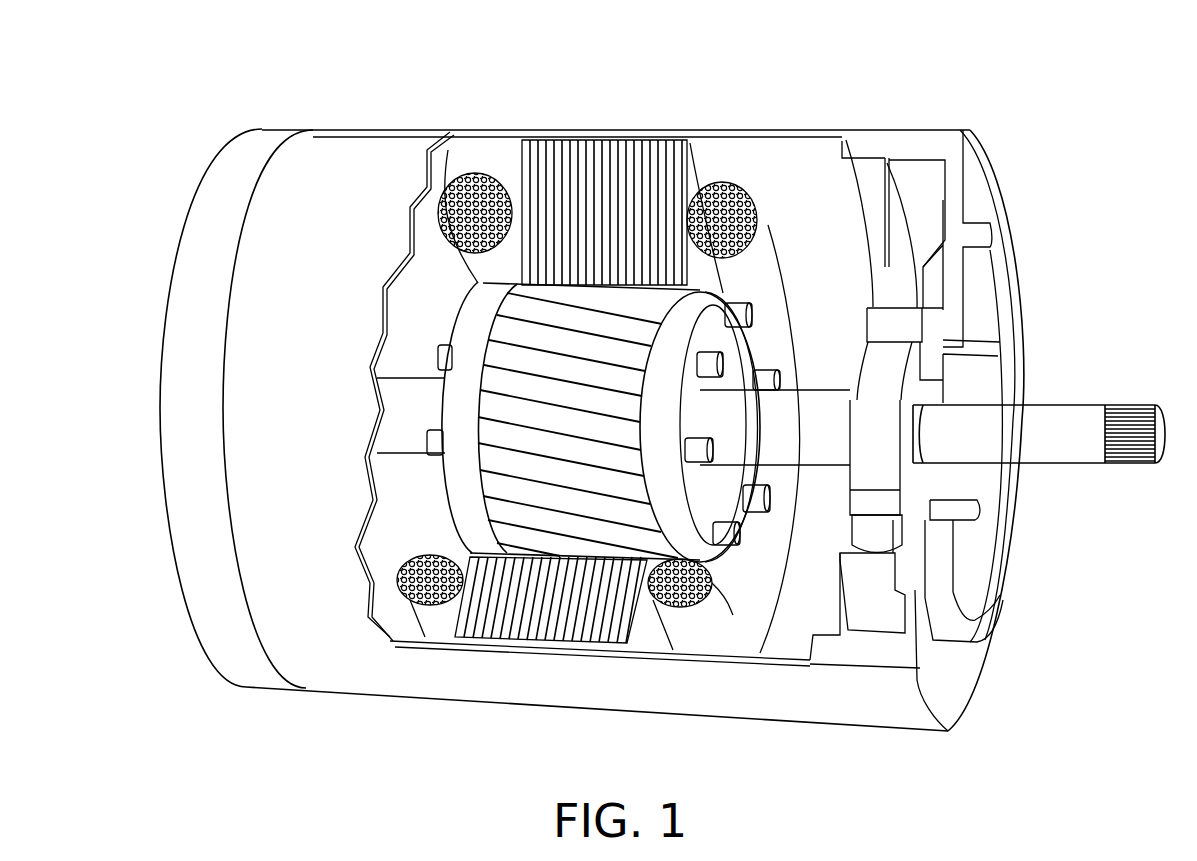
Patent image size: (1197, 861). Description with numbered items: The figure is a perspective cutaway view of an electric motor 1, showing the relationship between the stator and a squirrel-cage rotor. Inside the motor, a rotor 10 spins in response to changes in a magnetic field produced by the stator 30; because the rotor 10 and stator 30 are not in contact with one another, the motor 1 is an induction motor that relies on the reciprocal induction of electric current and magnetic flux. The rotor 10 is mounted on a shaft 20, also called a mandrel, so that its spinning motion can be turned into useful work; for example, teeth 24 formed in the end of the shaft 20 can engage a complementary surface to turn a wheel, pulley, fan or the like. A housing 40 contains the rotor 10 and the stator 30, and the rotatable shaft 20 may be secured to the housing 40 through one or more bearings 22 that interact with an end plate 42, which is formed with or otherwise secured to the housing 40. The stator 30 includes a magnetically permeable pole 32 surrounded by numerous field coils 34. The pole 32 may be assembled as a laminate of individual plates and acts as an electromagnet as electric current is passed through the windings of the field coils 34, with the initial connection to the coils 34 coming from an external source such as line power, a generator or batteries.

The electric motor 1 is at (150, 86).
The rotor 10 is at (490, 410).
The shaft 20 is at (1077, 457).
The bearings 22 is at (867, 358).
The teeth 24 is at (1135, 412).
The stator 30 is at (617, 160).
The magnetically permeable pole 32 is at (552, 623).
The field coils 34 is at (757, 213).
The housing 40 is at (757, 683).
The end plate 42 is at (980, 203).